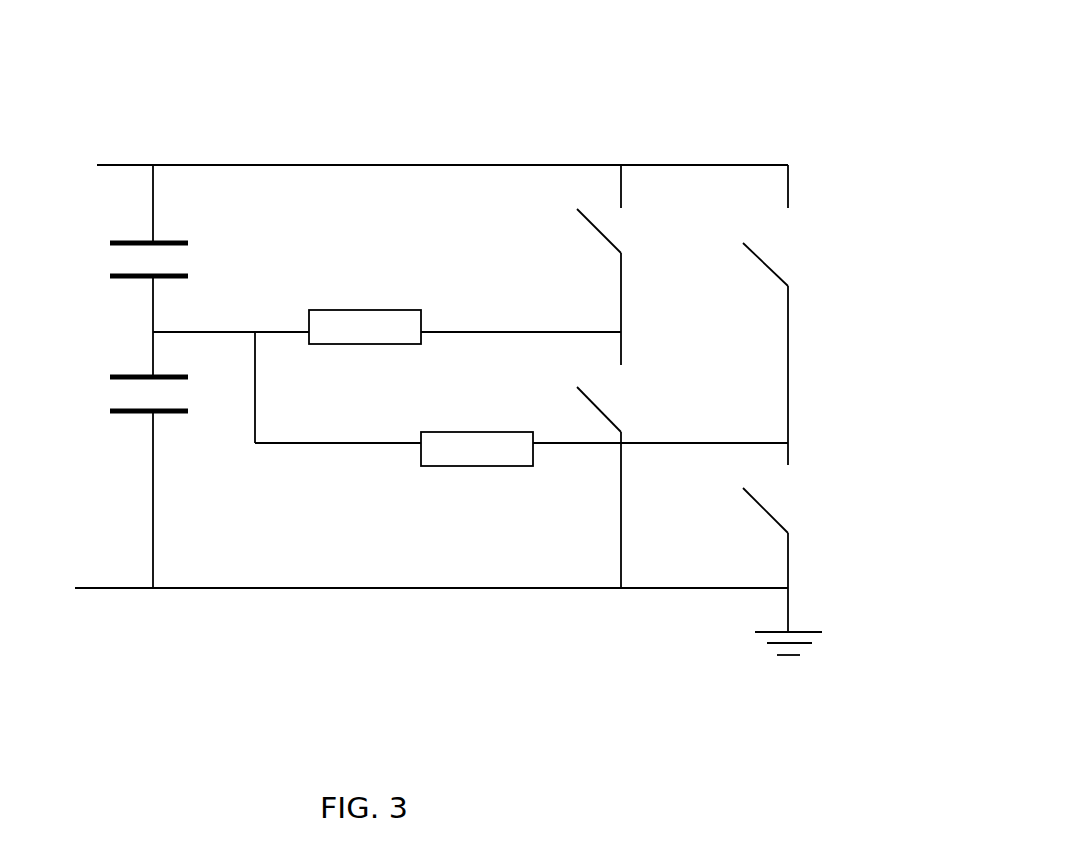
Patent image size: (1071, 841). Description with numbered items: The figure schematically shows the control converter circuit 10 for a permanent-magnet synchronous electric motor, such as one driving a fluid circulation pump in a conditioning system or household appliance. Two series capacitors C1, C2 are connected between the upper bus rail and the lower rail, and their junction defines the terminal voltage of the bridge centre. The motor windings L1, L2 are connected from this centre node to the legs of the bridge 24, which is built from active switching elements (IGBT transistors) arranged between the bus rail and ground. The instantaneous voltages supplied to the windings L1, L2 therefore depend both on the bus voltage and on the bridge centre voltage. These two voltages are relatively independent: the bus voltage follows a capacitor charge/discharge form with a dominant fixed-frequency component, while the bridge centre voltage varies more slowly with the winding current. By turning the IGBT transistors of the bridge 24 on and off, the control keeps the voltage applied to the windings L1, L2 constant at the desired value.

The control converter circuit 10 is at (471, 347).
The bridge 24 is at (718, 374).
The upper bus capacitor C1 is at (194, 248).
The lower bus capacitor C2 is at (135, 460).
The motor winding L1 is at (465, 291).
The motor winding L2 is at (521, 490).